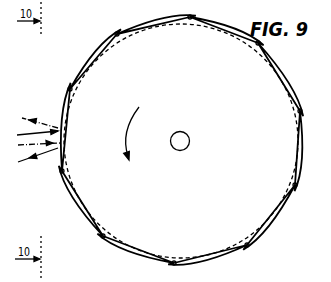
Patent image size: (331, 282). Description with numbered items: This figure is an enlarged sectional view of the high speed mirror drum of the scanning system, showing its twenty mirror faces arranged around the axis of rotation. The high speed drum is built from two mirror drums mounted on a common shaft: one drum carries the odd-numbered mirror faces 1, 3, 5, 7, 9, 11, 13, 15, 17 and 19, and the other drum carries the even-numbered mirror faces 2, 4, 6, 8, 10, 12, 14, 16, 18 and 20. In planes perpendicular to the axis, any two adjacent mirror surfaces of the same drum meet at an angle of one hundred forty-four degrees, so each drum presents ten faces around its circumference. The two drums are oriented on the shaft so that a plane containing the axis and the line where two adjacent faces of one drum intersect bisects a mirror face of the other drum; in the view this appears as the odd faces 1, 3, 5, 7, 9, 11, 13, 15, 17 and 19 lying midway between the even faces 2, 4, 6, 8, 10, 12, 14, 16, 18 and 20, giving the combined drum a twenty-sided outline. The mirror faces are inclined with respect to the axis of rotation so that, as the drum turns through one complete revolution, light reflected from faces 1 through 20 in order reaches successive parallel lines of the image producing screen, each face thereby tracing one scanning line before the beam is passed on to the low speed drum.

The mirror face 1 is at (293, 185).
The mirror face 2 is at (275, 219).
The mirror face 3 is at (246, 243).
The mirror face 4 is at (205, 260).
The mirror face 5 is at (175, 261).
The mirror face 6 is at (138, 257).
The mirror face 7 is at (106, 237).
The mirror face 8 is at (79, 204).
The mirror face 9 is at (64, 171).
The mirror face 10 is at (58, 118).
The mirror face 11 is at (73, 89).
The mirror face 12 is at (93, 66).
The mirror face 13 is at (120, 37).
The mirror face 14 is at (154, 23).
The mirror face 15 is at (190, 19).
The mirror face 16 is at (228, 31).
The mirror face 17 is at (256, 44).
The mirror face 18 is at (286, 77).
The mirror face 19 is at (298, 112).
The mirror face 20 is at (305, 151).